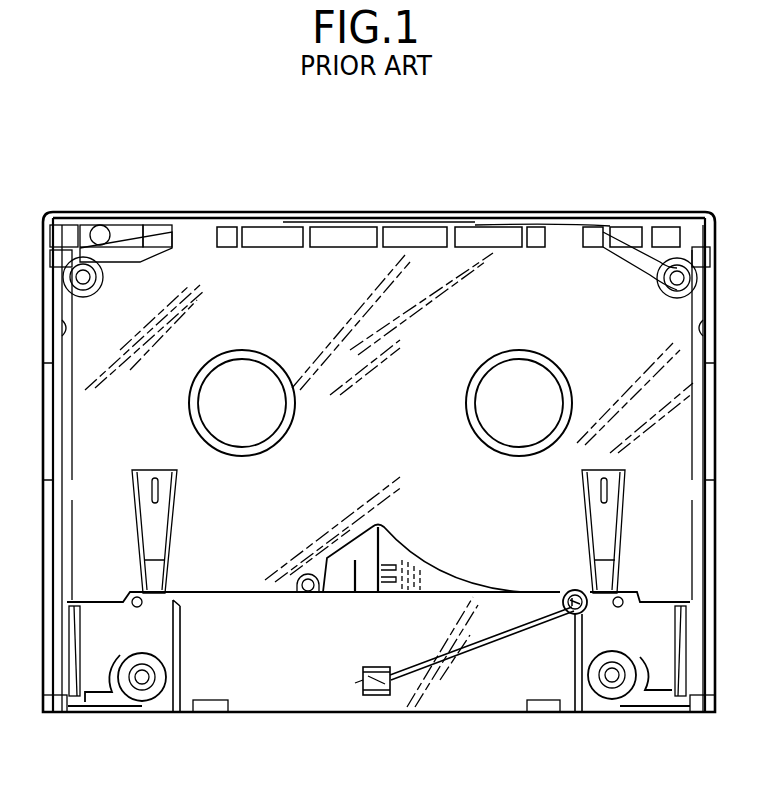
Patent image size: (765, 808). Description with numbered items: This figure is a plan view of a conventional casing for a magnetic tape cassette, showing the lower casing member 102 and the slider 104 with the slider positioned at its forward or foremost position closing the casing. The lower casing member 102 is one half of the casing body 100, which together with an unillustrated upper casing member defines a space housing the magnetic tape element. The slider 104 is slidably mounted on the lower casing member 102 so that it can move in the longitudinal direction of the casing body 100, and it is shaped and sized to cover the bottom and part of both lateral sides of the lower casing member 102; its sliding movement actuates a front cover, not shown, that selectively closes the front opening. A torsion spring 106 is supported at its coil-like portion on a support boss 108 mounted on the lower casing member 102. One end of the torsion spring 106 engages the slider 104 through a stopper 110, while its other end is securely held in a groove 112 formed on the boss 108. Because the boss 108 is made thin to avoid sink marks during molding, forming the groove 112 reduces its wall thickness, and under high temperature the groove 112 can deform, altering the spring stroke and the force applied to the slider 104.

The casing body 100 is at (604, 208).
The lower casing member 102 is at (194, 240).
The slider 104 is at (270, 700).
The torsion spring 106 is at (489, 644).
The support boss 108 is at (565, 590).
The stopper 110 is at (382, 696).
The groove 112 is at (586, 612).